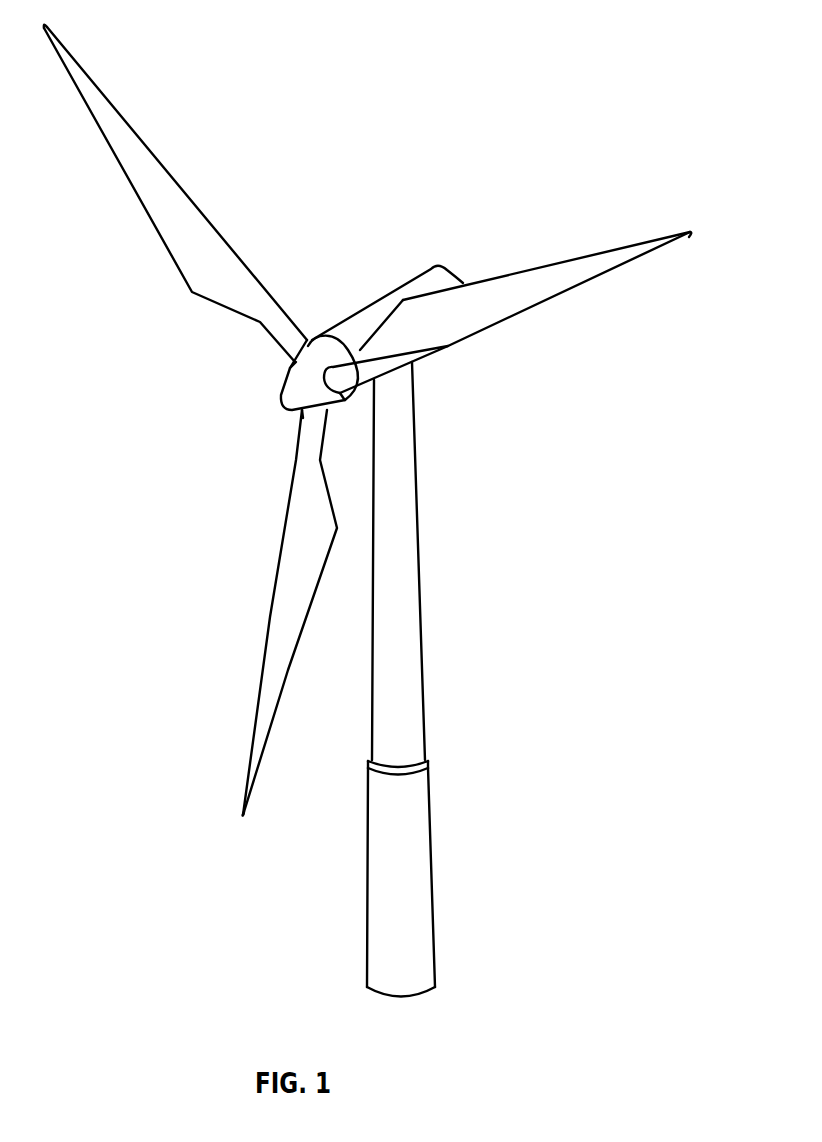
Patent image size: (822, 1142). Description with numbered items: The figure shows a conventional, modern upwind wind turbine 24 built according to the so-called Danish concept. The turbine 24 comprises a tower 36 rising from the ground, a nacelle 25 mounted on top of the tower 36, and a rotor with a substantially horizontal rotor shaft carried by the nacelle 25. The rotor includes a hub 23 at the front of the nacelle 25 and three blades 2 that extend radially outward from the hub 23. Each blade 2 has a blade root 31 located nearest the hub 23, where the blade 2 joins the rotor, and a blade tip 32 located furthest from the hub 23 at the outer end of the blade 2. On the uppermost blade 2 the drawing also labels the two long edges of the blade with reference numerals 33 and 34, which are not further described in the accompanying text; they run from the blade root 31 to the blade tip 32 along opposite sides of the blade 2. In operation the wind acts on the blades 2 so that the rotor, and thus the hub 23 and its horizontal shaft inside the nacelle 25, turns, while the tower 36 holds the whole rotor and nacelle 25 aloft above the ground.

The blade 2 is at (367, 428).
The hub 23 is at (277, 400).
The upwind turbine 24 is at (367, 510).
The nacelle 25 is at (353, 322).
The blade root 31 is at (287, 358).
The blade tip 32 is at (82, 74).
The trailing edge 33 is at (117, 165).
The leading edge 34 is at (167, 166).
The tower 36 is at (407, 478).